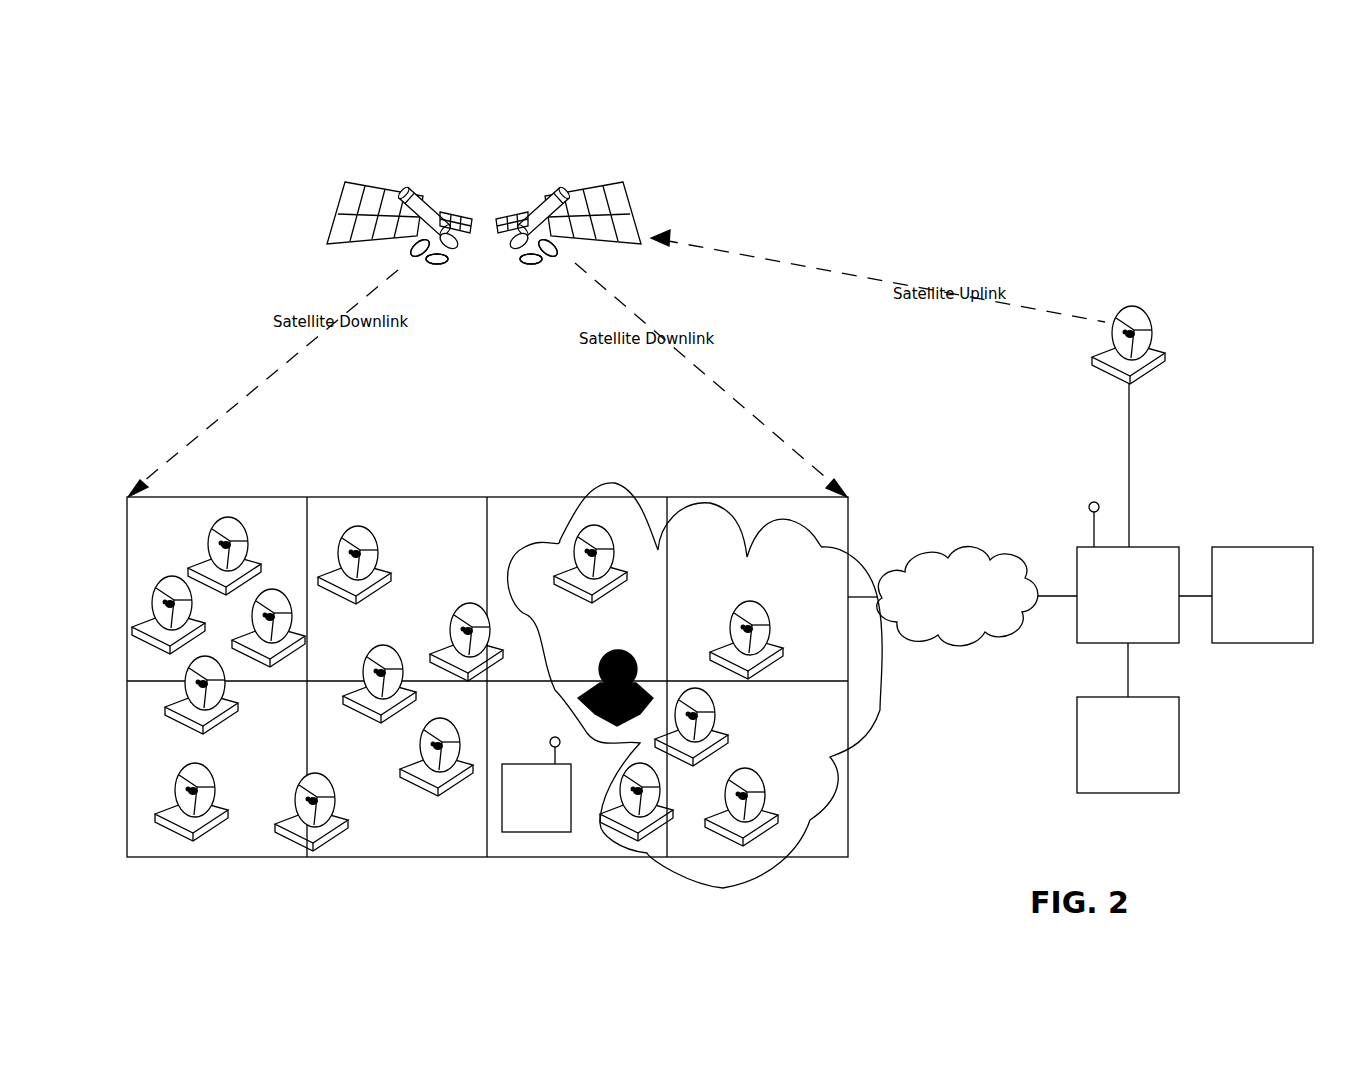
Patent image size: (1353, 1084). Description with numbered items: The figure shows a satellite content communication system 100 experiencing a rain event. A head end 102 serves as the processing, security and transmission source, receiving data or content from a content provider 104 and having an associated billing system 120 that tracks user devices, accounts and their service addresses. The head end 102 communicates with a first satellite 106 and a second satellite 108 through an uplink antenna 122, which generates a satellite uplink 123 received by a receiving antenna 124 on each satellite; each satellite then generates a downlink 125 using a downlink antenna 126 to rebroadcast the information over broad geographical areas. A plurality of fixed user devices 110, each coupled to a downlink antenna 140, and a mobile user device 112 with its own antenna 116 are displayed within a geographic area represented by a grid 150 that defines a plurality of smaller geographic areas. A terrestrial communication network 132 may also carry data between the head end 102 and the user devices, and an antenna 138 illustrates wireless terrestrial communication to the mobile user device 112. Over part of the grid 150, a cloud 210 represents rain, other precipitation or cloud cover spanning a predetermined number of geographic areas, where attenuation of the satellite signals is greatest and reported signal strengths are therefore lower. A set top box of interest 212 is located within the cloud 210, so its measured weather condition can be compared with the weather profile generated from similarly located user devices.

The content communication system 100 is at (1170, 172).
The head end 102 is at (1158, 547).
The content provider 104 is at (1262, 547).
The first satellite 106 is at (327, 228).
The second satellite 108 is at (625, 183).
The fixed user device 110 is at (145, 608).
The mobile user device 112 is at (503, 832).
The antenna 116 is at (560, 742).
The billing system 120 is at (1077, 740).
The uplink antenna 122 is at (1131, 306).
The satellite uplink 123 is at (805, 262).
The receiving antenna 124 is at (448, 268).
The downlink 125 is at (265, 378).
The downlink antenna 126 is at (408, 246).
The communication network 132 is at (962, 547).
The antenna 138 is at (1092, 502).
The downlink antenna 140 is at (232, 518).
The grid 150 is at (517, 496).
The cloud 210 is at (882, 710).
The set top box of interest 212 is at (633, 655).